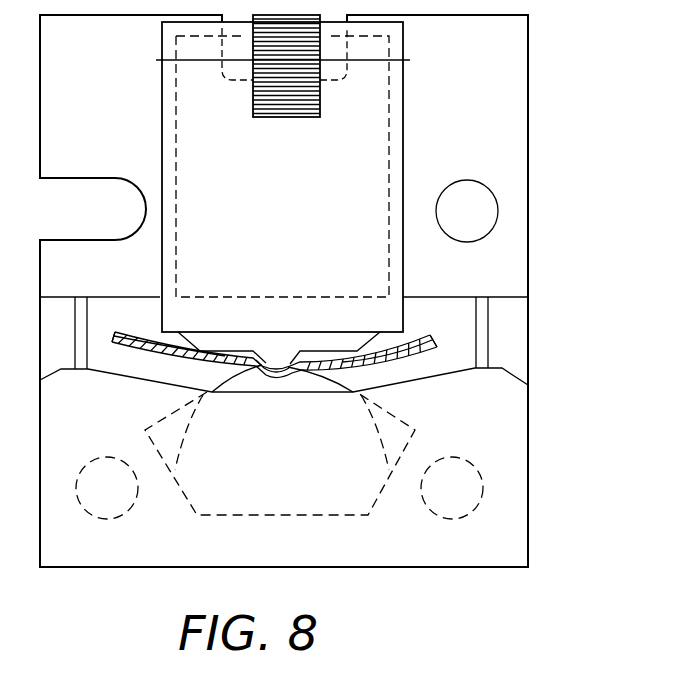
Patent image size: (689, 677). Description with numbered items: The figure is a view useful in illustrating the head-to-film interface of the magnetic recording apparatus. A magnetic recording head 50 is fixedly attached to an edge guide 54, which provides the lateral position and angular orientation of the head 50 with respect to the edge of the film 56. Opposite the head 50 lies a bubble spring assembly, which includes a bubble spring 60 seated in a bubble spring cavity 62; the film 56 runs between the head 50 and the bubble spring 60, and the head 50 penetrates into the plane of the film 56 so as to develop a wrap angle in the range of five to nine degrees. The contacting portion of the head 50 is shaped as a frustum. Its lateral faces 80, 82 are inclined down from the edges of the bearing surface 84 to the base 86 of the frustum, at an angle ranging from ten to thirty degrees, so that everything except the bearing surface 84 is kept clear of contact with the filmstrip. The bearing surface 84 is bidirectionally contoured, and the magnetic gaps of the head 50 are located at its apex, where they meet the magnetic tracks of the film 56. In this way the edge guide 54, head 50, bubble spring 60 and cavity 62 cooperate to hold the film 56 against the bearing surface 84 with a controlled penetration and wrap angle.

The magnetic recording head 50 is at (217, 173).
The edge guide 54 is at (505, 70).
The film 56 is at (413, 338).
The bubble spring 60 is at (253, 363).
The bubble spring cavity 62 is at (420, 437).
The lateral face 80 is at (258, 360).
The lateral face 82 is at (343, 362).
The bearing surface 84 is at (270, 364).
The base 86 is at (225, 355).